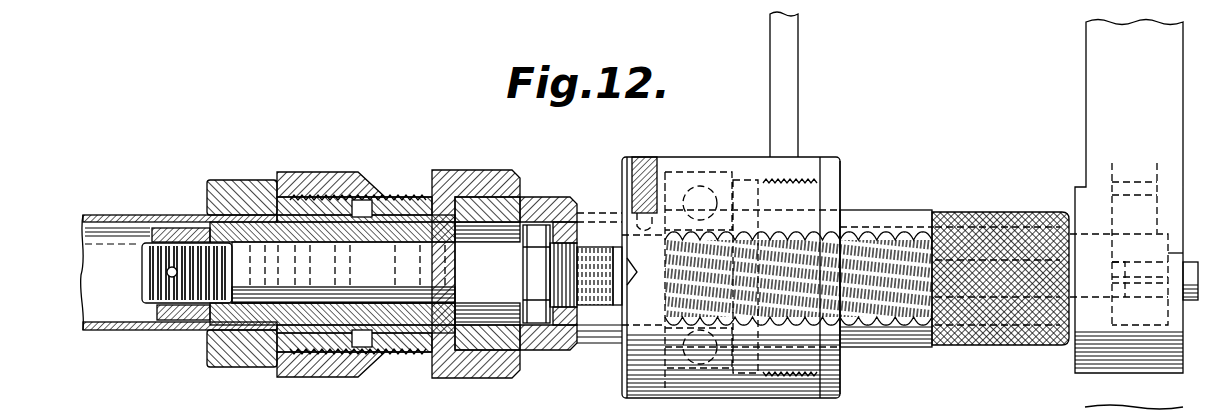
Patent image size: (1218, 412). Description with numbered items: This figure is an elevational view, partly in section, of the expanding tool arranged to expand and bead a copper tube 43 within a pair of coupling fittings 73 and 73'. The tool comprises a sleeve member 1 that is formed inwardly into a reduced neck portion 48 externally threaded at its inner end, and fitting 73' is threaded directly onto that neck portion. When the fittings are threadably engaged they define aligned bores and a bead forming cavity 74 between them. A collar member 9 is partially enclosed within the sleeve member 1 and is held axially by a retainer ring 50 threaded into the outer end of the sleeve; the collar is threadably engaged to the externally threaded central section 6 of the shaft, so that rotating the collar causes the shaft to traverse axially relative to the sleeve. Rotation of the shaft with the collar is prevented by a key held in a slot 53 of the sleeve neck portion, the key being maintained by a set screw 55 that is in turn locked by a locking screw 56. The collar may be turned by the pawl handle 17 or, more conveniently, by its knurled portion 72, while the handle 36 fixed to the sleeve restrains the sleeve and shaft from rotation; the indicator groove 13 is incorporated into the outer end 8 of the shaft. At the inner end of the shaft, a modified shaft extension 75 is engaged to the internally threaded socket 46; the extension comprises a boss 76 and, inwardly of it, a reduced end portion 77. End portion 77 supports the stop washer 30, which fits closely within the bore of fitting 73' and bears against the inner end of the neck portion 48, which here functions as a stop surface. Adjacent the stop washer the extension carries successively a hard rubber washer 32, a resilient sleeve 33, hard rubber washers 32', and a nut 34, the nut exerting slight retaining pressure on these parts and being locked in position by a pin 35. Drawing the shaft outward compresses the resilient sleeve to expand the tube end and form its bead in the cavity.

The sleeve member 1 is at (710, 157).
The central section 6 is at (563, 327).
The outer end 8 is at (1190, 262).
The collar member 9 is at (876, 212).
The indicator groove 13 is at (1112, 262).
The pawl handle 17 is at (1086, 130).
The stop washer 30 is at (447, 205).
The hard rubber washer 32 is at (361, 243).
The hard rubber washers 32' is at (242, 257).
The resilient sleeve 33 is at (387, 217).
The nut 34 is at (182, 240).
The pin 35 is at (170, 268).
The handle 36 is at (800, 106).
The copper tube 43 is at (152, 331).
The internally threaded socket 46 is at (565, 312).
The reduced neck portion 48 is at (535, 208).
The retainer ring 50 is at (828, 166).
The slot 53 is at (530, 220).
The set screw 55 is at (622, 198).
The locking screw 56 is at (643, 157).
The knurled portion 72 is at (1005, 212).
The coupling fitting 73 is at (347, 254).
The coupling fitting 73' is at (358, 243).
The bead forming cavity 74 is at (362, 205).
The shaft extension 75 is at (447, 330).
The boss 76 is at (487, 293).
The reduced end portion 77 is at (423, 284).